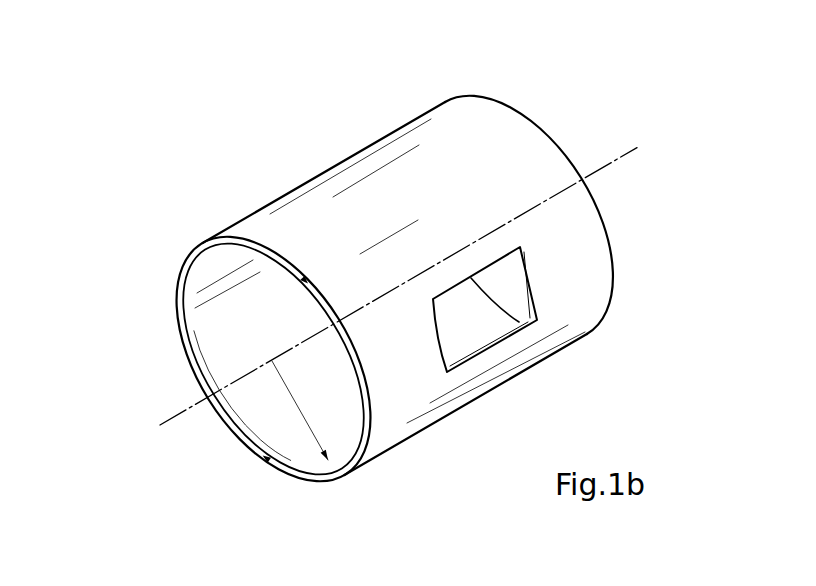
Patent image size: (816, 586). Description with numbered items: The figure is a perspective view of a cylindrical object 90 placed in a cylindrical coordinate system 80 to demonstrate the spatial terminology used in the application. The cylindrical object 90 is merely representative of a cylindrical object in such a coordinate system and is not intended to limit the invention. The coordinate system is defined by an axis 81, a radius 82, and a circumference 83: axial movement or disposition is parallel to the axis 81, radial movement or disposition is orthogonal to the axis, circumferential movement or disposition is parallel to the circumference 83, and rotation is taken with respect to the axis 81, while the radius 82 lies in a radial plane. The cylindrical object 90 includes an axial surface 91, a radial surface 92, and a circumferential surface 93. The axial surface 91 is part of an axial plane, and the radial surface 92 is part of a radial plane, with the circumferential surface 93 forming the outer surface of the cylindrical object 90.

The cylindrical coordinate system 80 is at (419, 245).
The axis 81 is at (162, 425).
The radius 82 is at (311, 418).
The circumference 83 is at (179, 264).
The cylindrical object 90 is at (427, 100).
The axial surface 91 is at (510, 325).
The radial surface 92 is at (287, 471).
The circumferential surface 93 is at (373, 190).